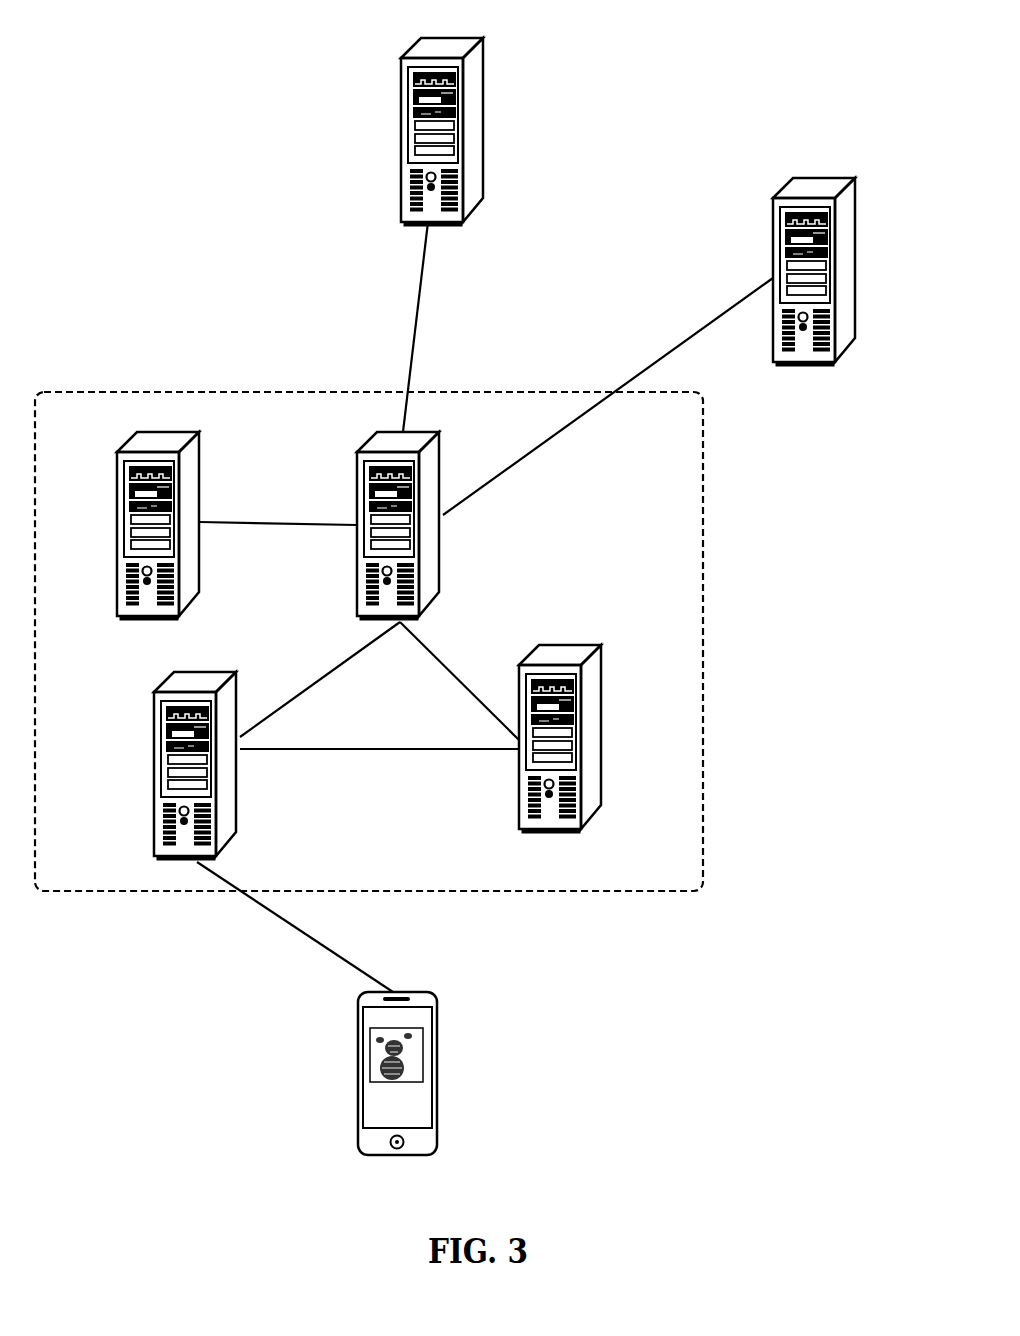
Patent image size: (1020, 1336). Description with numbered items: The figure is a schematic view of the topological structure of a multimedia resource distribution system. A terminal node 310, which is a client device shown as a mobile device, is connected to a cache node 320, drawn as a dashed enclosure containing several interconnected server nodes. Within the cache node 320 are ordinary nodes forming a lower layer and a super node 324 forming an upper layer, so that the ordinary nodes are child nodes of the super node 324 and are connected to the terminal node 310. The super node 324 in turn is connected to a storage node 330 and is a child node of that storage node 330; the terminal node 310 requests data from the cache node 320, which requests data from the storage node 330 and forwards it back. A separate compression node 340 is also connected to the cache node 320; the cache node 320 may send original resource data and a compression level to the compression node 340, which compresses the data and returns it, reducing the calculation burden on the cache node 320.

The terminal node 310 is at (418, 993).
The cache node 320 is at (58, 392).
The super node 324 is at (428, 431).
The storage node 330 is at (843, 174).
The compression node 340 is at (472, 34).